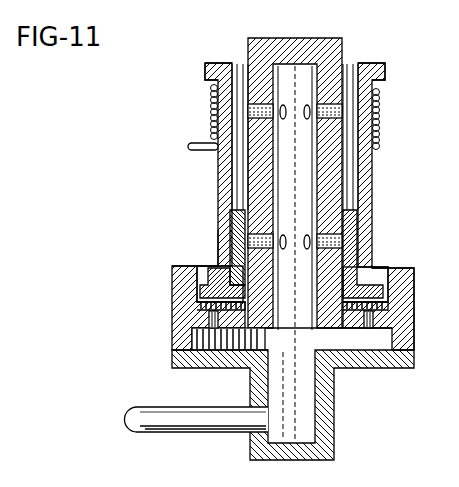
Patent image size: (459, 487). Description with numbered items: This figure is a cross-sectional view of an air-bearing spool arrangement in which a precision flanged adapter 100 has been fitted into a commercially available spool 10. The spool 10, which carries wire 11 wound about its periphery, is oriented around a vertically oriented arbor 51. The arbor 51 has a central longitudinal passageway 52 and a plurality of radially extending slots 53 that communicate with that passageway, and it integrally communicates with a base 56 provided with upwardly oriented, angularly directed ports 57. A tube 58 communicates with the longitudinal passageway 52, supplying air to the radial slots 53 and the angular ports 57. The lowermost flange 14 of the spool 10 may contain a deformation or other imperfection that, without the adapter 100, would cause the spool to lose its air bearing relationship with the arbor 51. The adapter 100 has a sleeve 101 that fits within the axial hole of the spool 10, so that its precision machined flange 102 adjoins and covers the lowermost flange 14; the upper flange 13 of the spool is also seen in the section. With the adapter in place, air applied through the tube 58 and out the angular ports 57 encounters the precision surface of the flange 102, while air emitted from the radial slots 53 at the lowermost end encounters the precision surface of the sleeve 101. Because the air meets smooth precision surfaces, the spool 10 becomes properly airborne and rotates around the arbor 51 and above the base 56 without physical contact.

The spool 10 is at (216, 168).
The wire 11 is at (198, 145).
The flange 13 is at (205, 78).
The lowermost flange 14 is at (381, 268).
The arbor 51 is at (345, 47).
The central longitudinal passageway 52 is at (303, 198).
The radially extending slots 53 is at (343, 122).
The base 56 is at (365, 368).
The angularly directed ports 57 is at (213, 322).
The tube 58 is at (183, 432).
The flanged adapter 100 is at (223, 257).
The sleeve 101 is at (235, 222).
The precision machined flange 102 is at (386, 290).